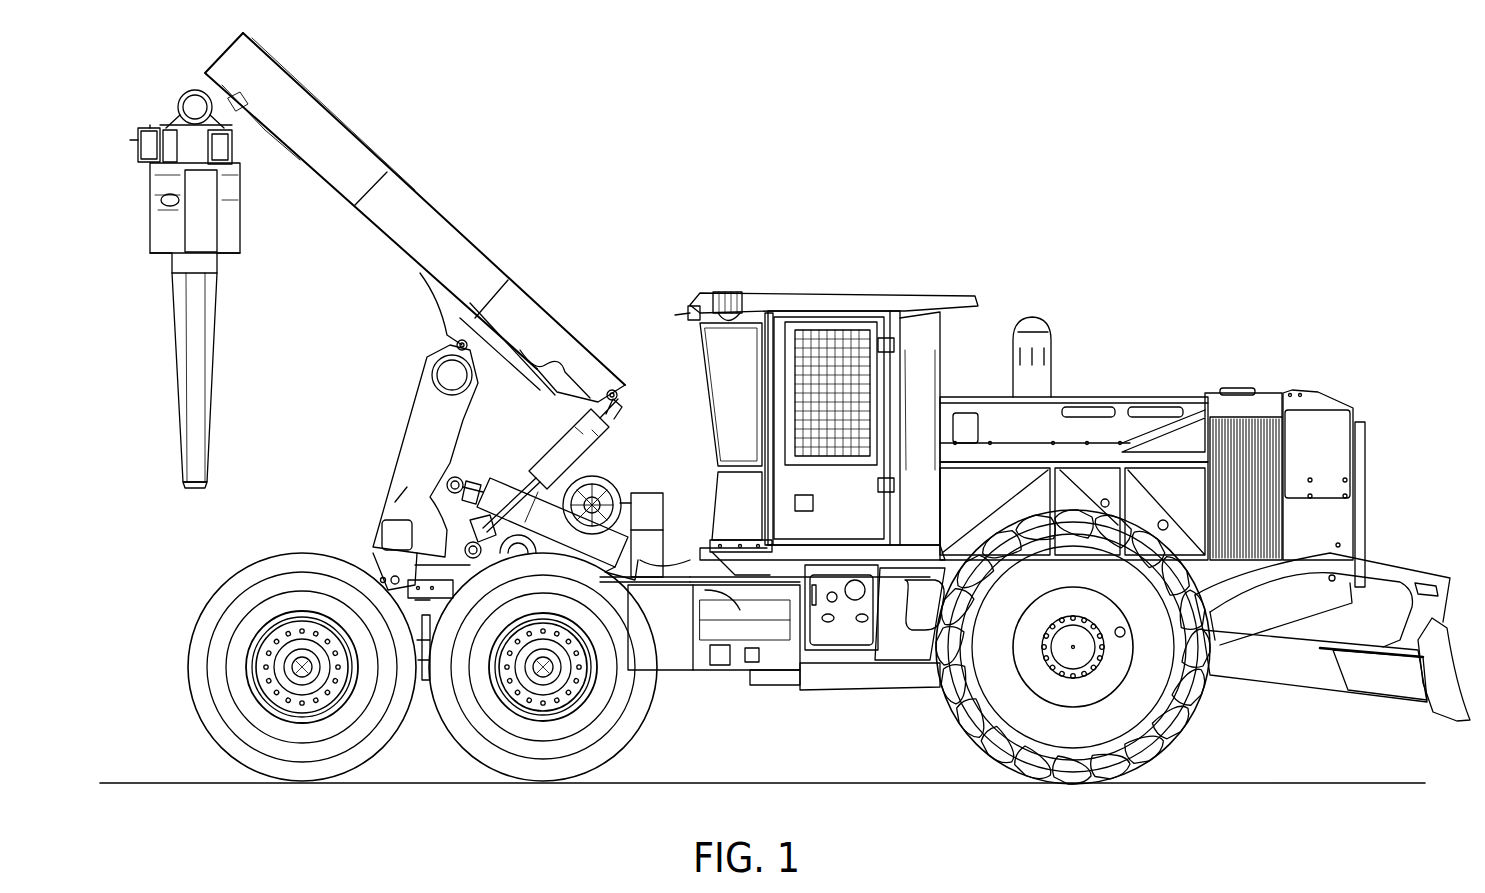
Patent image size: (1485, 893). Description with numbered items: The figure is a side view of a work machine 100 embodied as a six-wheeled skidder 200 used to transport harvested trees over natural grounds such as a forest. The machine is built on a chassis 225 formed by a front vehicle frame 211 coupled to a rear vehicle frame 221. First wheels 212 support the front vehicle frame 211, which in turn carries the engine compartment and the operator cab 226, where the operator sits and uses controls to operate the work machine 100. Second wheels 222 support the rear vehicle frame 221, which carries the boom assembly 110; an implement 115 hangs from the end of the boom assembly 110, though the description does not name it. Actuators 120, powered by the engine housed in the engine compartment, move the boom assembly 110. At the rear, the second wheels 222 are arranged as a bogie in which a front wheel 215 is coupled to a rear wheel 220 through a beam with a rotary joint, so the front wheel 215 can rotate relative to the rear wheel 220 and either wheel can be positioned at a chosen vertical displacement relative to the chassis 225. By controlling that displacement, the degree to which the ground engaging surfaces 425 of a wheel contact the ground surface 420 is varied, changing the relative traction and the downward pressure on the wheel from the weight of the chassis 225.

The work machine 100 is at (1105, 132).
The skidder 200 is at (996, 473).
The boom assembly 110 is at (380, 158).
The grapple 115 is at (205, 368).
The actuator 120 is at (530, 517).
The operator cab 226 is at (815, 295).
The rear vehicle frame 221 is at (675, 620).
The chassis 225 is at (727, 620).
The front vehicle frame 211 is at (930, 663).
The first wheels 212 is at (1085, 755).
The front wheel 215 is at (530, 748).
The rear wheel 220 is at (290, 748).
The second wheels 222 is at (422, 709).
The ground engaging surfaces 425 is at (1195, 736).
The ground surface 420 is at (1222, 863).